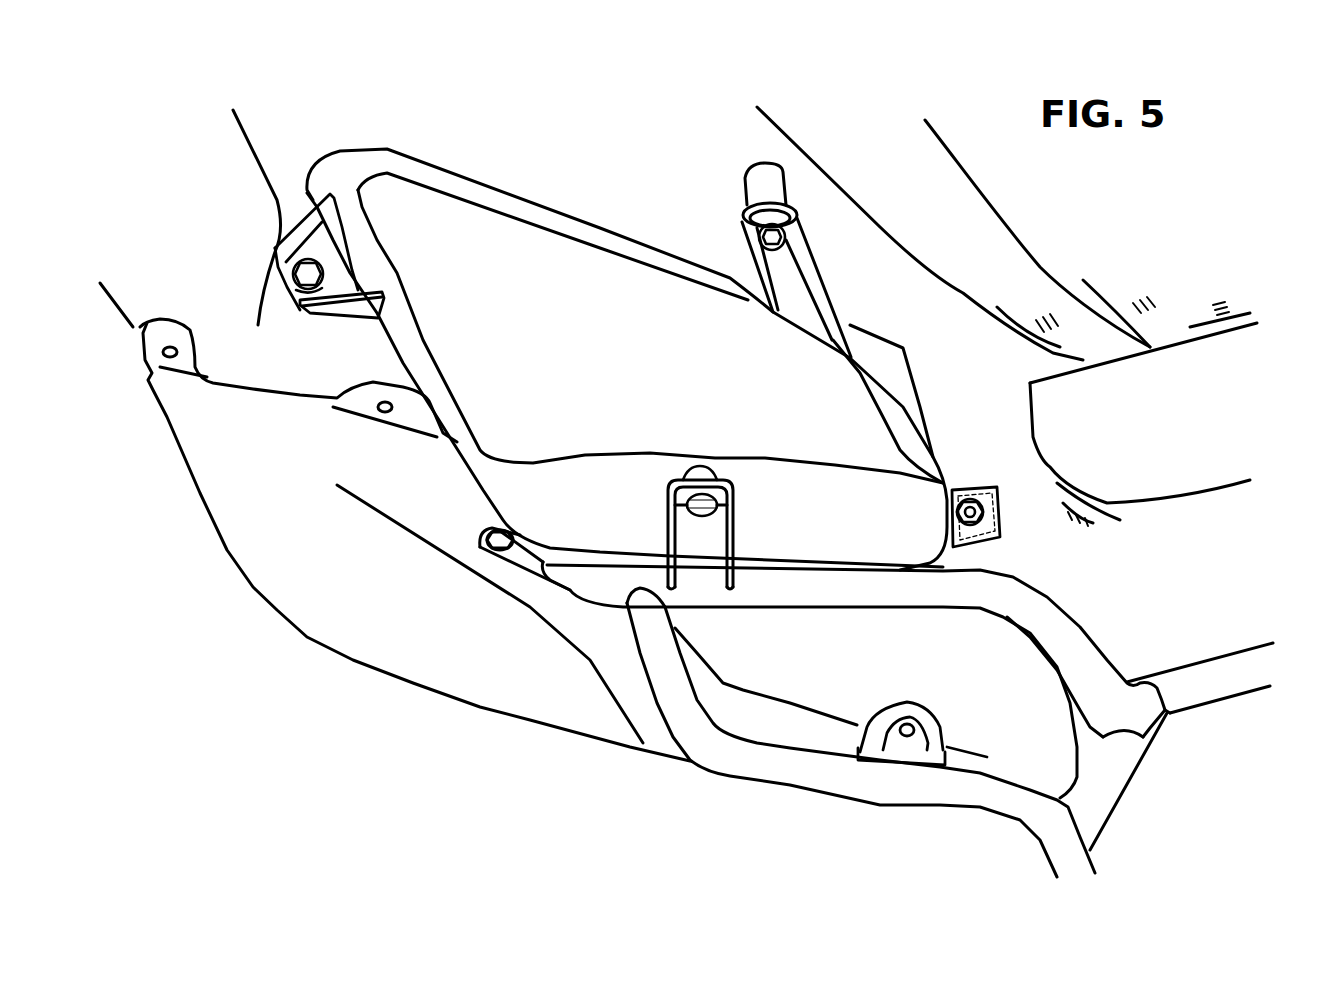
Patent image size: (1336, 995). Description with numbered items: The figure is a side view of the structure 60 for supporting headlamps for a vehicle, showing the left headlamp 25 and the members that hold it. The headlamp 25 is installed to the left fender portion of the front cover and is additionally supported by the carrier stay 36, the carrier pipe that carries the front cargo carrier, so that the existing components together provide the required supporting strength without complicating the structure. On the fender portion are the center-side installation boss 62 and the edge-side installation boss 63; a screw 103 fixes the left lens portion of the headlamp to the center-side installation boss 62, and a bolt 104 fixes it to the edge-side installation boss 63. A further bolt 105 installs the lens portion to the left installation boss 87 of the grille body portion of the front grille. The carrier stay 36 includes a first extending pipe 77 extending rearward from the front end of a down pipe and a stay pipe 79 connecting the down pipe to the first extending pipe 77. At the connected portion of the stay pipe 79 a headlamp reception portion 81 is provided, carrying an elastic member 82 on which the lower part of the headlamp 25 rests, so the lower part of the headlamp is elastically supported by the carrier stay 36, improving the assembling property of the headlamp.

The structure for supporting headlamps 60 is at (377, 97).
The left headlamp 25 is at (528, 205).
The carrier stay 36 is at (643, 706).
The center-side installation boss 62 is at (754, 221).
The edge-side installation boss 63 is at (340, 287).
The first extending pipe 77 is at (790, 637).
The stay pipe 79 is at (823, 787).
The headlamp reception portion 81 is at (748, 479).
The elastic member 82 is at (703, 470).
The left installation boss 87 is at (996, 580).
The screw 103 is at (760, 240).
The bolt 104 is at (326, 320).
The bolt 105 is at (952, 520).